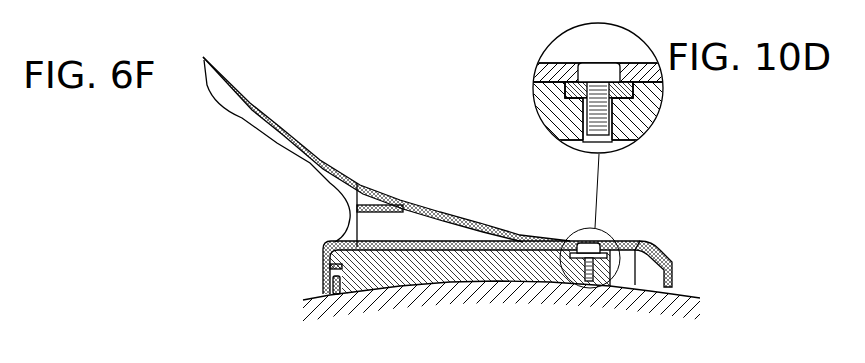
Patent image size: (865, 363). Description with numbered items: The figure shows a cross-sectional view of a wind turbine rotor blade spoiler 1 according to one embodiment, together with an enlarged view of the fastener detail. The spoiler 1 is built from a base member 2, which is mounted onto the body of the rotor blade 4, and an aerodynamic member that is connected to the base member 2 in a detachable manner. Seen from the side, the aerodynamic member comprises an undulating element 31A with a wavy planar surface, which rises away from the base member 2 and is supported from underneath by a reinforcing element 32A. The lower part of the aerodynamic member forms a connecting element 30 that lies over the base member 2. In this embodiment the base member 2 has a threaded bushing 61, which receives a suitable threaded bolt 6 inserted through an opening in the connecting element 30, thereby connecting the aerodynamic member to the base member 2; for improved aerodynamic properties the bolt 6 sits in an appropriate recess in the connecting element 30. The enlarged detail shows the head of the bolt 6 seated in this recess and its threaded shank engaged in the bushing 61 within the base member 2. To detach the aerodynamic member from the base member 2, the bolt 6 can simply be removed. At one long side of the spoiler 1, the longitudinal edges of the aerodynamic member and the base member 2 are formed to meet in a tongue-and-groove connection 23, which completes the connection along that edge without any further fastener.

In FIG. 6F, the spoiler 1 is at (452, 157).
In FIG. 6F, the base member 2 is at (660, 259).
In FIG. 6F, the rotor blade 4 is at (643, 296).
In FIG. 6F, the threaded bolt 6 is at (592, 241).
In FIG. 10D, the threaded bolt 6 is at (608, 70).
In FIG. 6F, the threaded bushing 61 is at (587, 293).
In FIG. 10D, the threaded bushing 61 is at (586, 146).
In FIG. 6F, the tongue-and-groove connection 23 is at (323, 262).
In FIG. 6F, the connecting element 30 is at (563, 242).
In FIG. 6F, the undulating element 31A is at (245, 92).
In FIG. 6F, the reinforcing element 32A is at (345, 196).